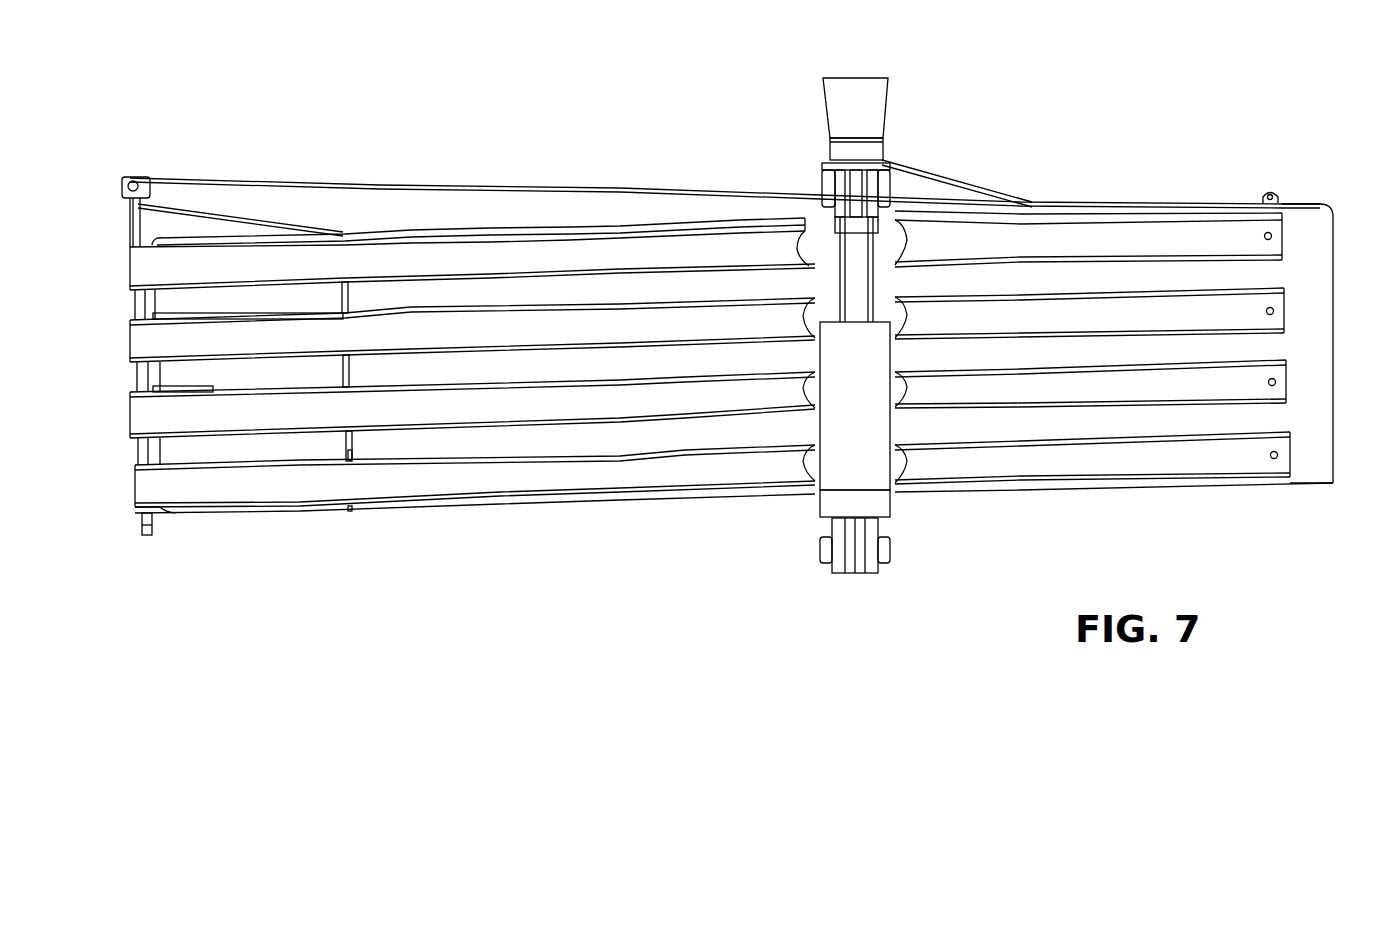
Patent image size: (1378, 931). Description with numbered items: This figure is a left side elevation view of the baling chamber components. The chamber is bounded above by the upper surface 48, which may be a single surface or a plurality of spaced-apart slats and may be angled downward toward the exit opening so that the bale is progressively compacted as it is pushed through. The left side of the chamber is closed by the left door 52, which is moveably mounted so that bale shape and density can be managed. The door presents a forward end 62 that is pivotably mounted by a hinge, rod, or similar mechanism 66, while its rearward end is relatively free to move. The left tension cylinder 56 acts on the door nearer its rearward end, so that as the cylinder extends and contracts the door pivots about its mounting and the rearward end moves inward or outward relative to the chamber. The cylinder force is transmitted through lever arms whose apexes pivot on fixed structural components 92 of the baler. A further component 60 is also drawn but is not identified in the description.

The upper surface 48 is at (397, 197).
The left door 52 is at (548, 480).
The left tension cylinder 56 is at (806, 506).
The right end plate 60 is at (1352, 275).
The forward end 62 is at (114, 500).
The pivot mounting mechanism 66 is at (118, 234).
The fixed structural components 92 is at (858, 88).